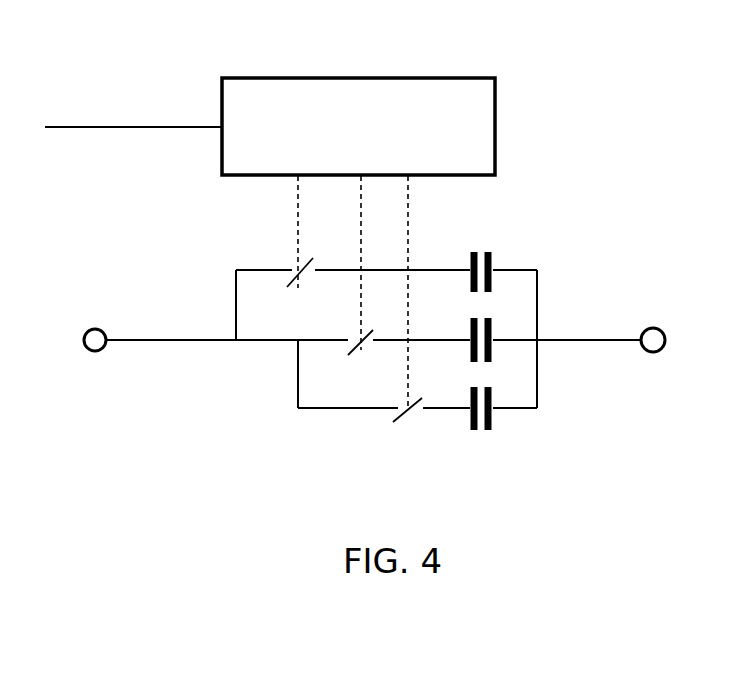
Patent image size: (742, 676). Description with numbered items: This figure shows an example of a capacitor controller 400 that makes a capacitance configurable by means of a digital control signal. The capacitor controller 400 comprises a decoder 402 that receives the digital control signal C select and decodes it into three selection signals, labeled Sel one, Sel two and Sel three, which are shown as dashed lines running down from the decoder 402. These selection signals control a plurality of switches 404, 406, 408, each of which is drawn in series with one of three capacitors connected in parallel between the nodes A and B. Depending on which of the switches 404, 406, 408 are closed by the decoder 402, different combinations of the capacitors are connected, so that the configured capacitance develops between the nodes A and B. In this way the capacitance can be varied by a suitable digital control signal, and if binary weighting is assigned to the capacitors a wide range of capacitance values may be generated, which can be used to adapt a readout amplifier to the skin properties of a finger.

The capacitor controller 400 is at (600, 62).
The decoder 402 is at (323, 77).
The switch 404 is at (288, 285).
The switch 406 is at (347, 356).
The switch 408 is at (401, 427).